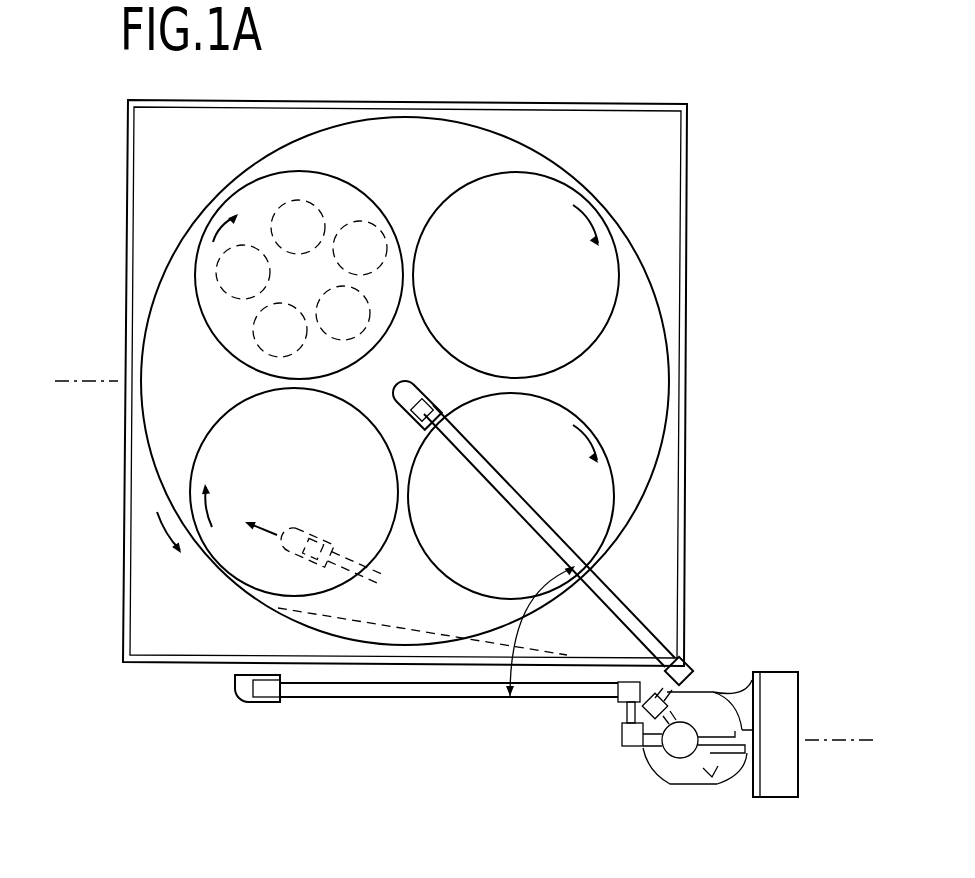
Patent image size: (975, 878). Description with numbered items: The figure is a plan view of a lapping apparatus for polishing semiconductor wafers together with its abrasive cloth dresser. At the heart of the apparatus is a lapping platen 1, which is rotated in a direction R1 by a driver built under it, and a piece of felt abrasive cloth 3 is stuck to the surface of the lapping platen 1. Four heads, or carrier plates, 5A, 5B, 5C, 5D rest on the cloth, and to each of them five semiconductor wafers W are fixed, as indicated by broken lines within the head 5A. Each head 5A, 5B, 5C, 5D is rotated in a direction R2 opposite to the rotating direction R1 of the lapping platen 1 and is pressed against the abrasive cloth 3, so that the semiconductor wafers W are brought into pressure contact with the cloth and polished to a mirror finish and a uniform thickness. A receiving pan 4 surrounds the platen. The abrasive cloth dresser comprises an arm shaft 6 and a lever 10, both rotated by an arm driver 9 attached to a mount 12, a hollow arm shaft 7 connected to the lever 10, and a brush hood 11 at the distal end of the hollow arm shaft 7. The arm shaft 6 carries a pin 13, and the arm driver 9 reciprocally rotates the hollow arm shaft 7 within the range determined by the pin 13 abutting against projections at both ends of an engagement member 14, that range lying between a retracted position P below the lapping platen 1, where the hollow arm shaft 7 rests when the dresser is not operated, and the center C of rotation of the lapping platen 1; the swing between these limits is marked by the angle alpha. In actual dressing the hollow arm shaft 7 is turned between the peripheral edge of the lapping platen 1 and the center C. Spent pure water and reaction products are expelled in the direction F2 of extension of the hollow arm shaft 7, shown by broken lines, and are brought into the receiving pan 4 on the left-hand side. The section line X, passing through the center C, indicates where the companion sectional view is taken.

The lapping platen 1 is at (560, 170).
The abrasive cloth 3 is at (468, 133).
The receiving pan 4 is at (688, 230).
The head 5A is at (340, 177).
The head 5B is at (603, 312).
The head 5C is at (590, 428).
The head 5D is at (208, 438).
The arm shaft 6 is at (672, 755).
The hollow arm shaft 7 is at (553, 552).
The arm driver 9 is at (705, 688).
The lever 10 is at (622, 737).
The brush hood 11 is at (418, 388).
The mount 12 is at (790, 762).
The pin 13 is at (753, 678).
The engagement member 14 is at (716, 778).
The semiconductor wafer W is at (368, 225).
The center of rotation C is at (398, 378).
The retracted position P is at (235, 692).
The rotating direction of lapping platen R1 is at (172, 549).
The rotating direction of heads R2 is at (400, 359).
The direction of extension of hollow arm shaft F2 is at (249, 544).
The section line X is at (462, 560).
The swing angle alpha is at (529, 631).